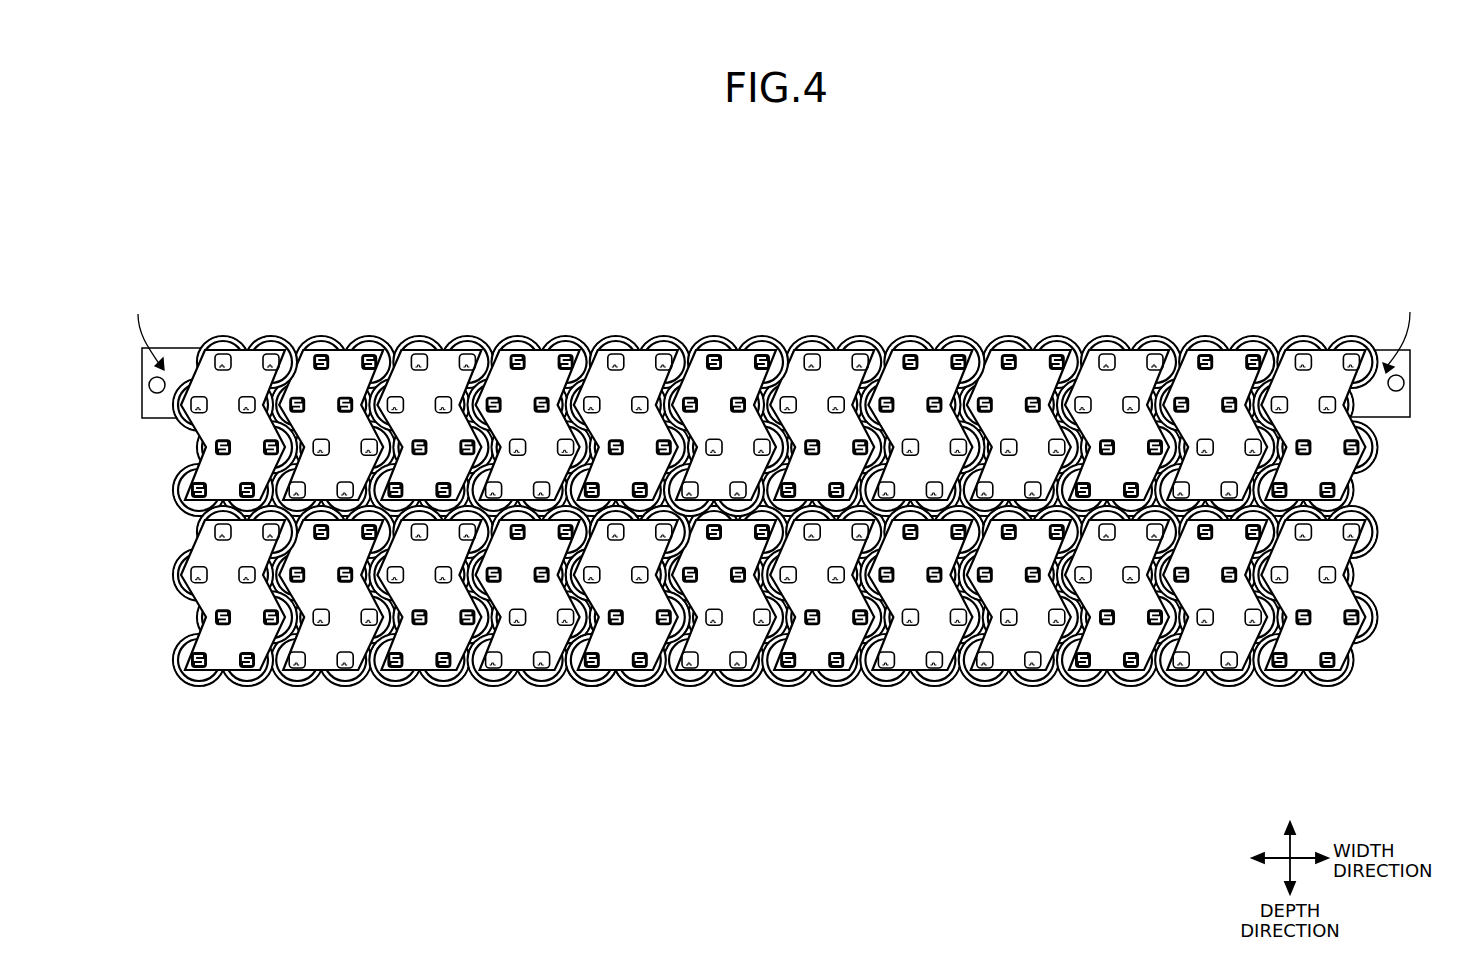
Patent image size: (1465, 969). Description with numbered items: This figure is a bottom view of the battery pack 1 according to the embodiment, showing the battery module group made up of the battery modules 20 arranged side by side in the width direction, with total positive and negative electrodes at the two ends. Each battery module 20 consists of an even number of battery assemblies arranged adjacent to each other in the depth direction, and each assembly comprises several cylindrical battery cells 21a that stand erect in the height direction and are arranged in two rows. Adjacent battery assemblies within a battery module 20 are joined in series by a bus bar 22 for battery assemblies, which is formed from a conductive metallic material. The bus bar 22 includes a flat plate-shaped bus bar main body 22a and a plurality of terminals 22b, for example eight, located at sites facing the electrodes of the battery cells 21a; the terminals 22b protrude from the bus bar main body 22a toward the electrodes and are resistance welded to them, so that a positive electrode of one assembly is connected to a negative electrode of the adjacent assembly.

The battery pack 1 is at (606, 230).
The battery module 20 is at (1168, 630).
The battery cell 21a is at (200, 395).
The bus bar for battery assemblies 22 is at (880, 425).
The bus bar main body 22a is at (857, 425).
The terminal 22b is at (836, 490).